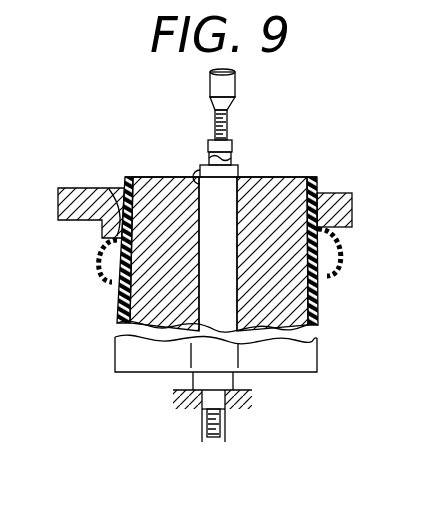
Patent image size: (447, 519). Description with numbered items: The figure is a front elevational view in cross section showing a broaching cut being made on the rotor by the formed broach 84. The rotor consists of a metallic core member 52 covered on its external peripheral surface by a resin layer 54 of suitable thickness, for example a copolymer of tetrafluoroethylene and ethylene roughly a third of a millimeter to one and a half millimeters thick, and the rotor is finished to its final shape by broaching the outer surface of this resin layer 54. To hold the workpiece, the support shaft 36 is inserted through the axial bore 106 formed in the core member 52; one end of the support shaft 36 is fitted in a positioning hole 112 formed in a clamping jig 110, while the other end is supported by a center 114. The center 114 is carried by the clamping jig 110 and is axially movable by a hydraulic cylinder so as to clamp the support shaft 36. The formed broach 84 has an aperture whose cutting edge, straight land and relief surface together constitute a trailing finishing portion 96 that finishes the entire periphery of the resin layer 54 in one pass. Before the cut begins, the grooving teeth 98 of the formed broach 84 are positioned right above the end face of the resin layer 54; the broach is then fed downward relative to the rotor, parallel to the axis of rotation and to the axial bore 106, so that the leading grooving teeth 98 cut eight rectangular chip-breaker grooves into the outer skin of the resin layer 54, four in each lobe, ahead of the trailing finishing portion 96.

The support shaft 36 is at (234, 173).
The core member 52 is at (264, 183).
The resin layer 54 is at (312, 180).
The formed broach 84 is at (88, 184).
The trailing finishing portion 96 is at (112, 197).
The grooving teeth 98 is at (97, 237).
The axial bore 106 is at (203, 172).
The clamping jig 110 is at (235, 405).
The positioning hole 112 is at (200, 400).
The center 114 is at (212, 90).